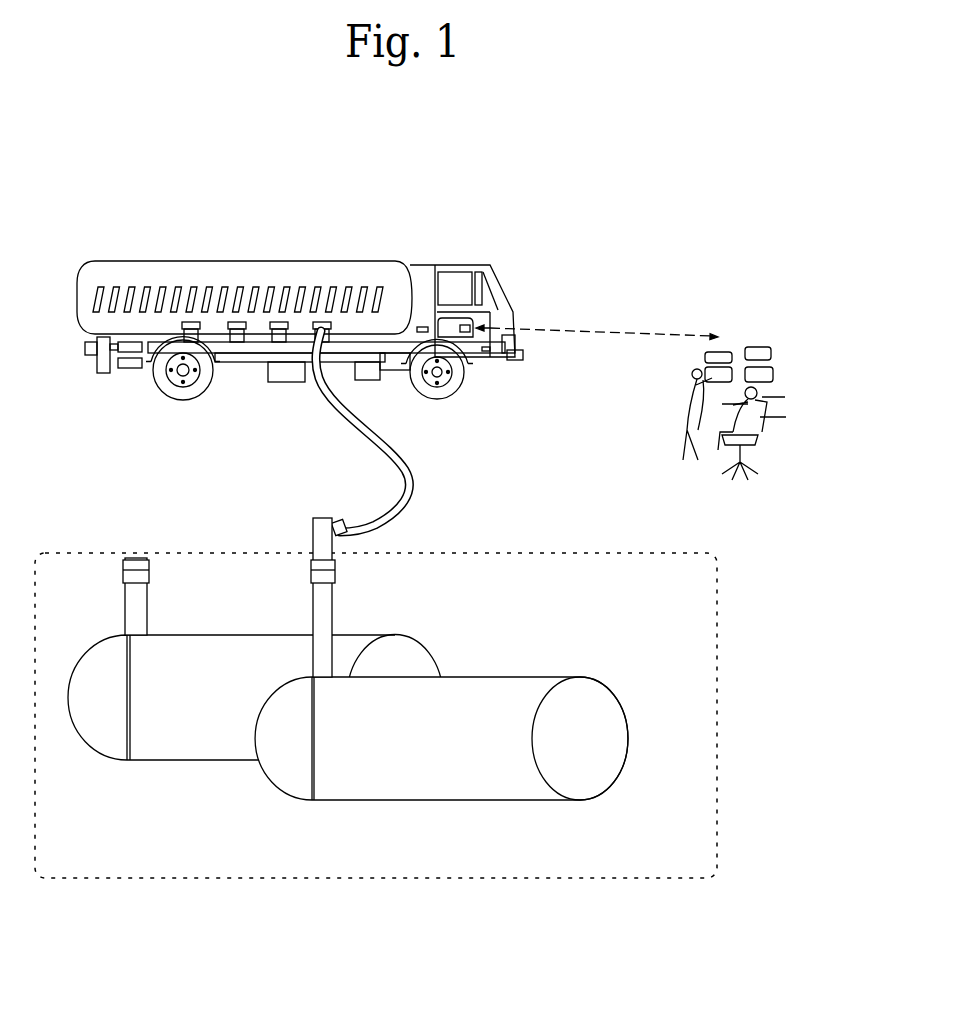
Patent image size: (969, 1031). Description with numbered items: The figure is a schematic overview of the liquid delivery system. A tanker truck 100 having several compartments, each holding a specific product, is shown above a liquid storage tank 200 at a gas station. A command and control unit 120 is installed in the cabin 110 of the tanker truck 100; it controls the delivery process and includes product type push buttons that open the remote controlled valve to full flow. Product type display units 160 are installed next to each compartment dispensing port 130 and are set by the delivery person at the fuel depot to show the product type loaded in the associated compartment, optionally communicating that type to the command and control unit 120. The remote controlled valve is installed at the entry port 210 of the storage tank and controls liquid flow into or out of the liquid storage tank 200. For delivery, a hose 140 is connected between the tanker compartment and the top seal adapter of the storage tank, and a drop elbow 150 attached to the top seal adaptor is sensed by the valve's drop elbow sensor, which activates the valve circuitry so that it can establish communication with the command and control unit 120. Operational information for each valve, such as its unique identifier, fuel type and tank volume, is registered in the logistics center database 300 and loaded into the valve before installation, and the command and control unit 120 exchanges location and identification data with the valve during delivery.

The tanker truck 100 is at (316, 306).
The cabin 110 is at (435, 257).
The command and control unit 120 is at (453, 313).
The compartment dispensing port 130 is at (308, 337).
The hose 140 is at (418, 464).
The drop elbow 150 is at (323, 515).
The product type display unit 160 is at (328, 317).
The liquid storage tank 200 is at (446, 675).
The entry port of the liquid storage tank 210 is at (311, 553).
The logistics center database 300 is at (755, 350).